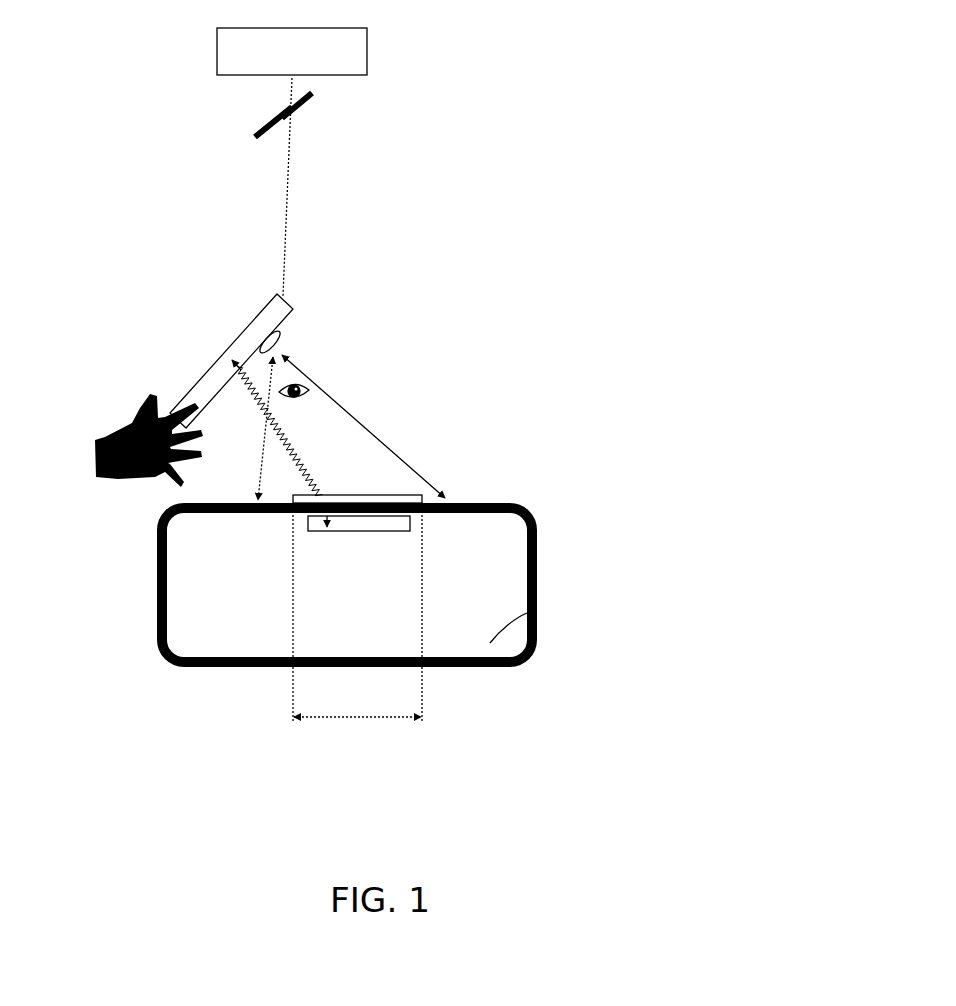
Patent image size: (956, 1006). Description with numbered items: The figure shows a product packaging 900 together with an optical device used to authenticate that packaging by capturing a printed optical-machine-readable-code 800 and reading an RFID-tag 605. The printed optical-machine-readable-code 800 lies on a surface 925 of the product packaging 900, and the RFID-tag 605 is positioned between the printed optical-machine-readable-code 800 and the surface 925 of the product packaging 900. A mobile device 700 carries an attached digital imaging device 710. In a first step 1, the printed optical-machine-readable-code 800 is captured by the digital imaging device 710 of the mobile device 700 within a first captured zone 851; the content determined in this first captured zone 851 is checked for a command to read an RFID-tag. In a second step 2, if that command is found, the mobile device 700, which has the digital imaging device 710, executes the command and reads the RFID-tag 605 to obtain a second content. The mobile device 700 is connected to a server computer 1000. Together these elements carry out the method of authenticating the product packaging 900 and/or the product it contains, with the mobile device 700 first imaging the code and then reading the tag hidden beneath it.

The server computer 1000 is at (362, 58).
The mobile device 700 is at (254, 324).
The digital imaging device 710 is at (292, 323).
The first step 1 is at (263, 458).
The second step 2 is at (347, 410).
The printed optical-machine-readable-code 800 is at (398, 496).
The surface 925 is at (480, 503).
The RFID-tag 605 is at (412, 533).
The product packaging 900 is at (535, 622).
The first captured zone 851 is at (377, 718).